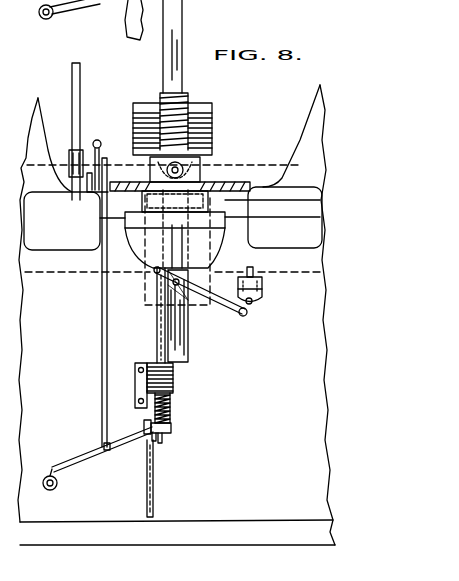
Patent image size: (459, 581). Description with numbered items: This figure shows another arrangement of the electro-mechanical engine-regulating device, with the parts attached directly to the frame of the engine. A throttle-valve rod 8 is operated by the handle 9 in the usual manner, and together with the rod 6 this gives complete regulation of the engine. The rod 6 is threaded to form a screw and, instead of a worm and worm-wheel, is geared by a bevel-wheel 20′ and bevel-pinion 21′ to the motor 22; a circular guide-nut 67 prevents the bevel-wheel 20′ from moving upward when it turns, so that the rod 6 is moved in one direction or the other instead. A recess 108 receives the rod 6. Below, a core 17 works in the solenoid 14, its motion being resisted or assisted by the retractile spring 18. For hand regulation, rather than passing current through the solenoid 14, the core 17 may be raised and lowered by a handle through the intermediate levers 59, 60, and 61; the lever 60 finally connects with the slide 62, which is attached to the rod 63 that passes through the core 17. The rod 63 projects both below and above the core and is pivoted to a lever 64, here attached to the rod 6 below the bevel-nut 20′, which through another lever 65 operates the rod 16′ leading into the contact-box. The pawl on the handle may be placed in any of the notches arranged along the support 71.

The support 71 is at (124, 5).
The rod 6 is at (180, 71).
The motor 22 is at (214, 133).
The bevel-wheel 20′ is at (233, 181).
The bevel-pinion 21′ is at (198, 165).
The circular guide-nut 67 is at (244, 201).
The throttle-valve rod 8 is at (82, 104).
The handle 9 is at (71, 152).
The lever 59 is at (102, 328).
The rod 16′ is at (255, 271).
The lever 64 is at (231, 313).
The lever 65 is at (251, 311).
The rod 63 is at (156, 336).
The recess 108 is at (190, 330).
The solenoid 14 is at (175, 378).
The core 17 is at (171, 401).
The retractile spring 18 is at (172, 426).
The slide 62 is at (144, 425).
The lever 60 is at (85, 460).
The lever 61 is at (48, 480).